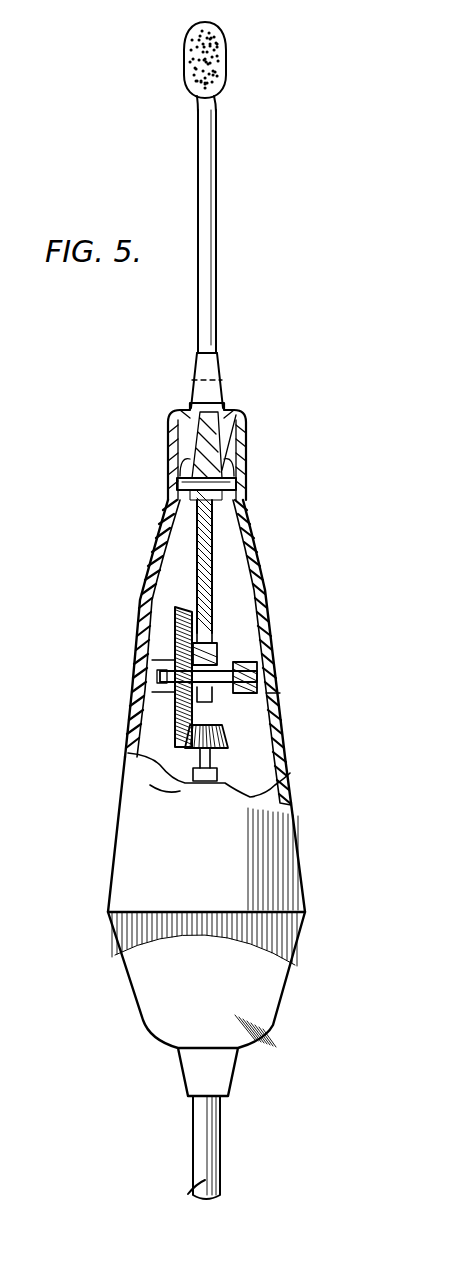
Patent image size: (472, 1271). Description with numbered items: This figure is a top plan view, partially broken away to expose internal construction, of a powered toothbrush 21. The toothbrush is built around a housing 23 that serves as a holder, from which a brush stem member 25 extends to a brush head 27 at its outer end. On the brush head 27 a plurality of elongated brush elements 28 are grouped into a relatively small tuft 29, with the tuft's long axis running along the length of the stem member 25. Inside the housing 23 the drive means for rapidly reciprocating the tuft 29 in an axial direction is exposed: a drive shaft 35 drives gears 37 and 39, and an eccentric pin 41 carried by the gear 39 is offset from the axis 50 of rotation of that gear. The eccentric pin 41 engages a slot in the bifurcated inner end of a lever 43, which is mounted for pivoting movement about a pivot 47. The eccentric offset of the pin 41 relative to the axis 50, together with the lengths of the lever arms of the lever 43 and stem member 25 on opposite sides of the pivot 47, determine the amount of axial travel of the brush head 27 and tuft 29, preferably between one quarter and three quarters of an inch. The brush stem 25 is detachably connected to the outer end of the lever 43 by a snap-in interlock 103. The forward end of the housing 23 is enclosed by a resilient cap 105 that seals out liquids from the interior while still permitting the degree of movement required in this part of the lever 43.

The powered toothbrush 21 is at (307, 597).
The housing 23 is at (130, 823).
The brush stem member 25 is at (220, 260).
The brush head 27 is at (228, 78).
The brush elements 28 is at (219, 60).
The tuft 29 is at (175, 69).
The drive shaft 35 is at (211, 762).
The gear 37 is at (225, 742).
The gear 39 is at (187, 605).
The eccentric pin 41 is at (212, 655).
The lever 43 is at (212, 552).
The pivot 47 is at (242, 484).
The axis of rotation 50 is at (246, 678).
The snap-in interlock 103 is at (210, 372).
The resilient cap 105 is at (168, 437).